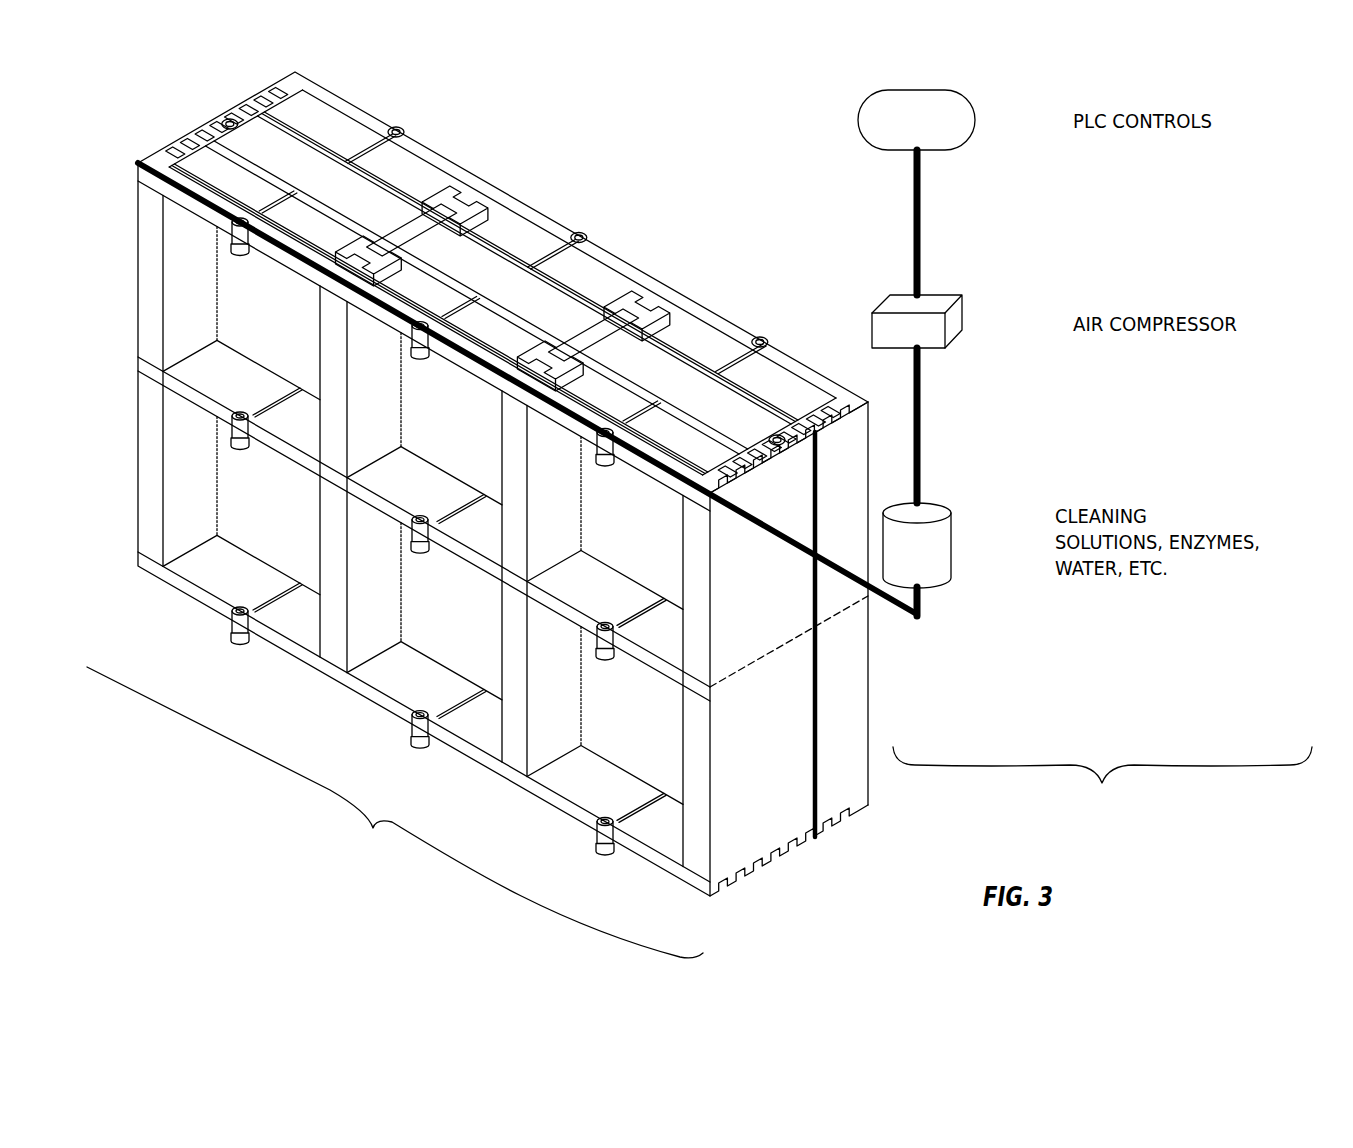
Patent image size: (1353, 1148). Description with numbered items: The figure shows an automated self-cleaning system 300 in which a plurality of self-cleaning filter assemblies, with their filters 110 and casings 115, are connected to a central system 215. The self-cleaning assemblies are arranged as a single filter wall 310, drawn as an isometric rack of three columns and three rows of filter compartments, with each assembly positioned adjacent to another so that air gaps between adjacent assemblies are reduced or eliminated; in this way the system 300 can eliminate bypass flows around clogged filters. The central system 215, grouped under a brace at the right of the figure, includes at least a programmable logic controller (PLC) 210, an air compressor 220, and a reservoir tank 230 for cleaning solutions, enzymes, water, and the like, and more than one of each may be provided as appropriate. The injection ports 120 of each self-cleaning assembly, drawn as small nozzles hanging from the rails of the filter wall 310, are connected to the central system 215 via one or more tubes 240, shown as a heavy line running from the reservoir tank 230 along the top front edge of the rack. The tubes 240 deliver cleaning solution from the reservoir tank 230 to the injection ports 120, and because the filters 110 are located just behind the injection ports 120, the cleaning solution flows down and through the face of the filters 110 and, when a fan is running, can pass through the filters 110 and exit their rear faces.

The filter 110 is at (275, 508).
The casing 115 is at (678, 372).
The injection port 120 is at (433, 362).
The programmable logic controller (PLC) 210 is at (918, 90).
The central system 215 is at (1102, 781).
The air compressor 220 is at (964, 314).
The reservoir tank 230 is at (952, 536).
The tube 240 is at (892, 612).
The automated self-cleaning system 300 is at (701, 166).
The filter wall 310 is at (395, 812).